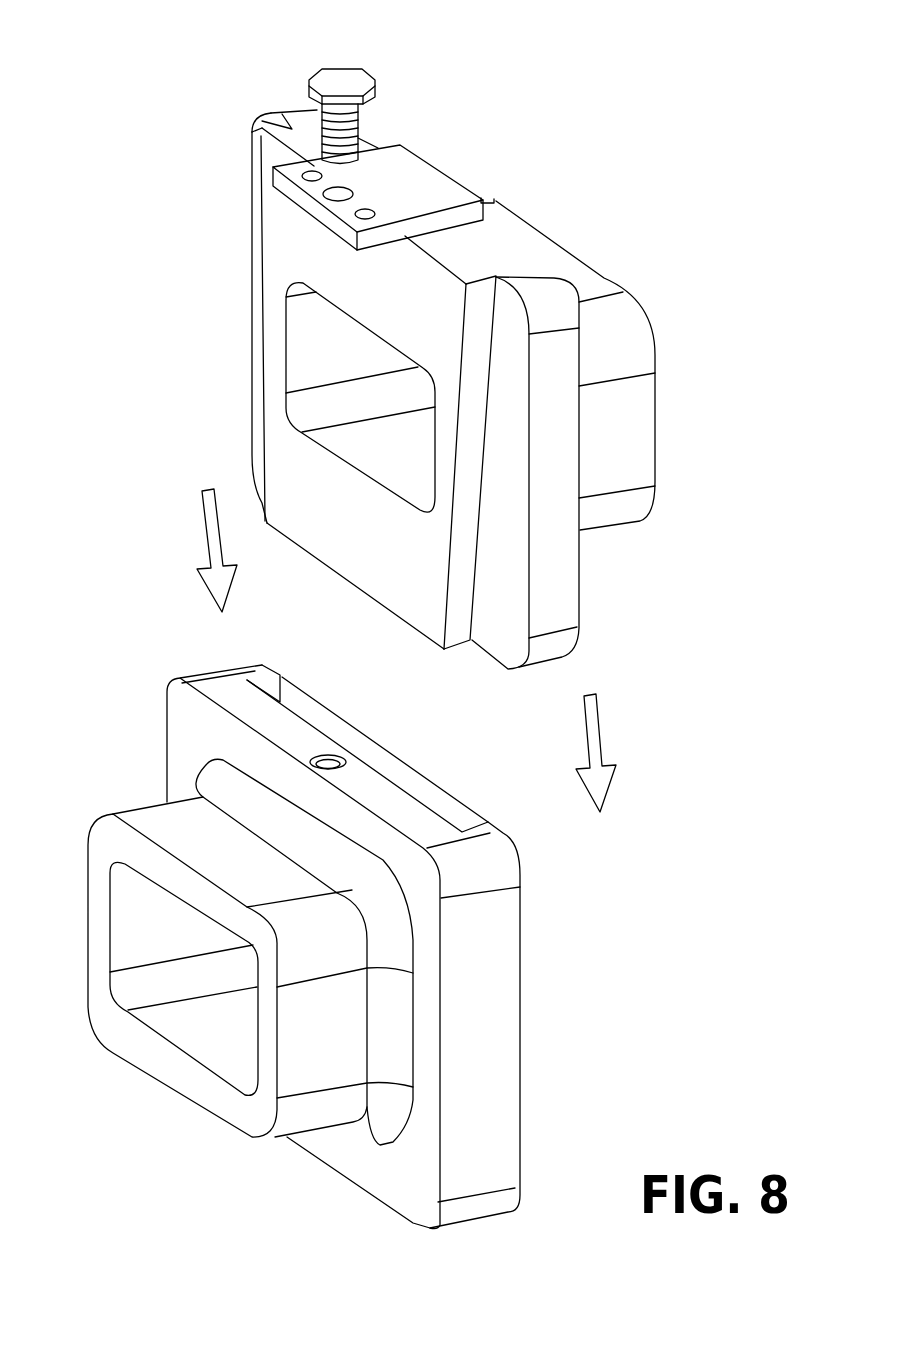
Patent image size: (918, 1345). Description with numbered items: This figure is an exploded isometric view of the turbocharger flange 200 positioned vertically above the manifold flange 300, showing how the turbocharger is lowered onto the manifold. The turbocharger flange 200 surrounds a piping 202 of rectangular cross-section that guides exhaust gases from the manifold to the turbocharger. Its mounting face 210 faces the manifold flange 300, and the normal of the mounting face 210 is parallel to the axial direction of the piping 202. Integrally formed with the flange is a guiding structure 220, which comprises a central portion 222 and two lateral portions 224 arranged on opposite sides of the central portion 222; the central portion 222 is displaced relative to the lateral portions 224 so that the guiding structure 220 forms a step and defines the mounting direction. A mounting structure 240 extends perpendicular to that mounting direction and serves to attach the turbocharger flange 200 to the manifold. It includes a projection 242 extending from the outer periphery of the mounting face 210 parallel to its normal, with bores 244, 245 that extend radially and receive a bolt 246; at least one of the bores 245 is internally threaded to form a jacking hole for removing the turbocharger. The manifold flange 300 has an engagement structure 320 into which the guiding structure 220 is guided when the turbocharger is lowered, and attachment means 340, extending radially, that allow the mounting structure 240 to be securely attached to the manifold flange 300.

The turbocharger flange 200 is at (612, 455).
The piping 202 is at (378, 400).
The mounting face 210 is at (238, 354).
The guiding structure 220 is at (461, 523).
The central portion 222 is at (412, 312).
The lateral portions 224 is at (500, 421).
The mounting structure 240 is at (418, 182).
The projection 242 is at (262, 270).
The bore 244 is at (336, 193).
The bores 245 is at (304, 173).
The bolt 246 is at (341, 78).
The manifold flange 300 is at (480, 1075).
The engagement structure 320 is at (552, 910).
The attachment means 340 is at (314, 753).